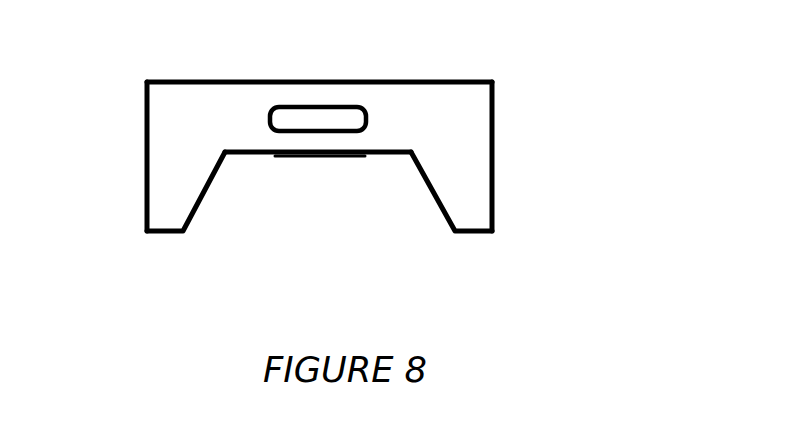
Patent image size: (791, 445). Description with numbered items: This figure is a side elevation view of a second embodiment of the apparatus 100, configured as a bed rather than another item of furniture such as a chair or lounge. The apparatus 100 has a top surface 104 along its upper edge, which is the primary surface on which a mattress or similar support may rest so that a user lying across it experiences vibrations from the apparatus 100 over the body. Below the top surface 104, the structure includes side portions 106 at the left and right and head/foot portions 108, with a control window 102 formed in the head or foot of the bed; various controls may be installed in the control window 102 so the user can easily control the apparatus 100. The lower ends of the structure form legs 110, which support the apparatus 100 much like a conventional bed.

The apparatus 100 is at (338, 130).
The control window 102 is at (320, 122).
The top surface 104 is at (243, 80).
The side portions 106 is at (143, 132).
The head/foot portions 108 is at (460, 140).
The legs 110 is at (468, 205).